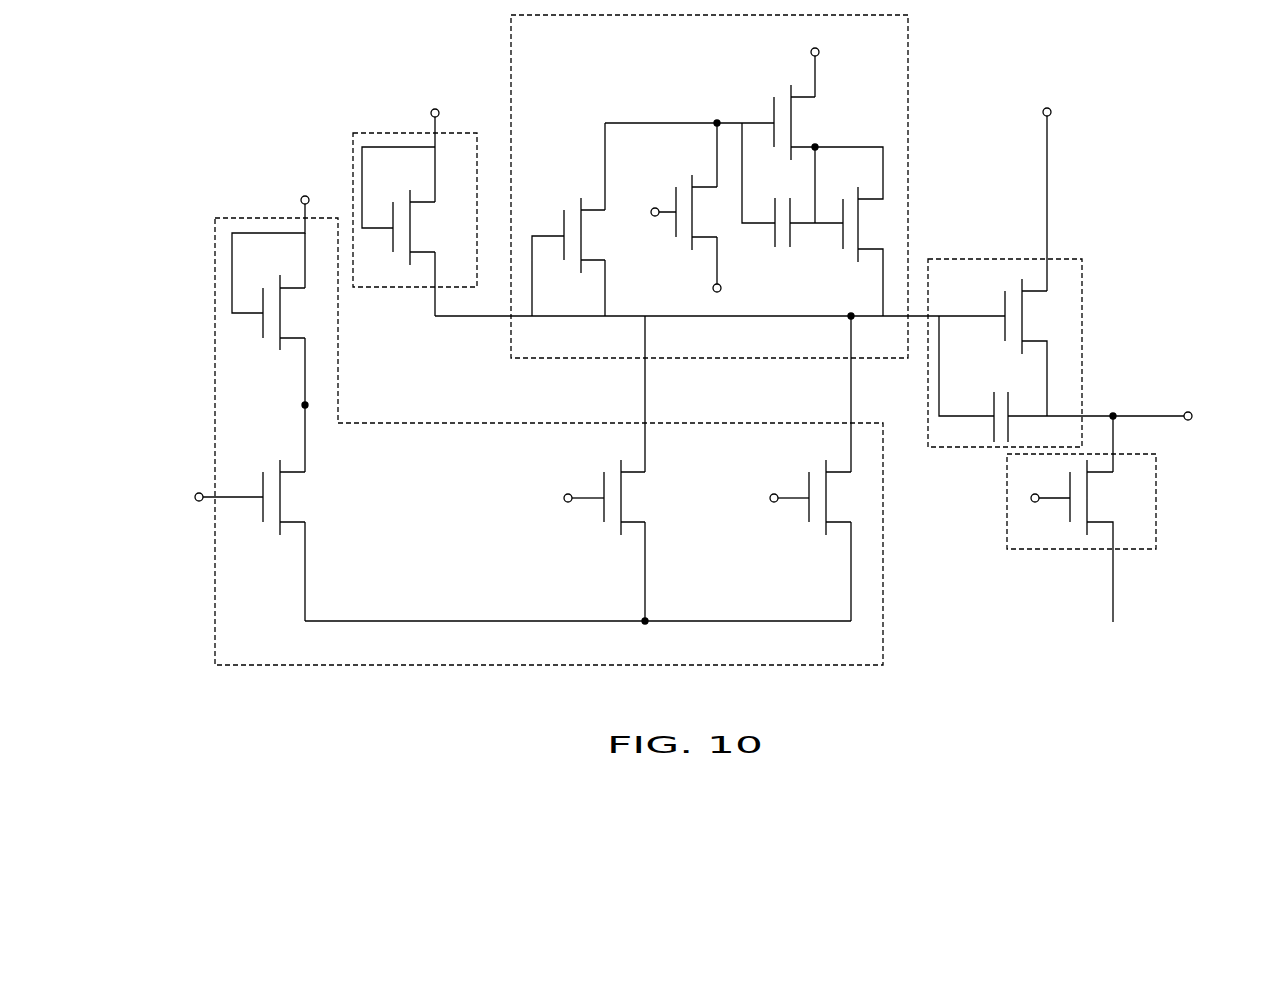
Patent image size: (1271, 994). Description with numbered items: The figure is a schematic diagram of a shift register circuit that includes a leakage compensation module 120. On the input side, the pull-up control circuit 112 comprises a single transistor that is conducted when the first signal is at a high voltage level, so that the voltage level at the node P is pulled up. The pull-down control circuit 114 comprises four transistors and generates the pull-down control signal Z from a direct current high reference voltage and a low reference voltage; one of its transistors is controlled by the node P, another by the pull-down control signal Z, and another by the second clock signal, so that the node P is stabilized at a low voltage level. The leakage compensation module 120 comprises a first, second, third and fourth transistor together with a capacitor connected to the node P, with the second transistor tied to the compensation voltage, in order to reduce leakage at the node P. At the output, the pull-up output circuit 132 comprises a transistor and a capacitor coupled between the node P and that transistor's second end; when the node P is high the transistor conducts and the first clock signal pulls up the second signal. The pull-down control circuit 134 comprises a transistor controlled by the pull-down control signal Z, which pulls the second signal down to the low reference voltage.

The pull-up control circuit 112 is at (389, 132).
The pull-down control circuit 114 is at (216, 336).
The leakage compensation module 120 is at (908, 38).
The pull-up output circuit 132 is at (1082, 281).
The pull-down control circuit 134 is at (1156, 476).